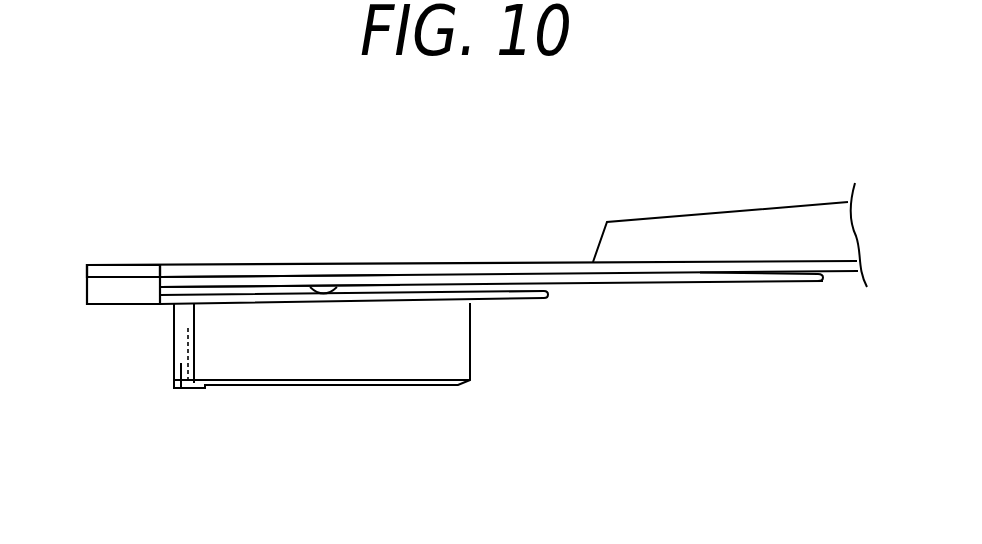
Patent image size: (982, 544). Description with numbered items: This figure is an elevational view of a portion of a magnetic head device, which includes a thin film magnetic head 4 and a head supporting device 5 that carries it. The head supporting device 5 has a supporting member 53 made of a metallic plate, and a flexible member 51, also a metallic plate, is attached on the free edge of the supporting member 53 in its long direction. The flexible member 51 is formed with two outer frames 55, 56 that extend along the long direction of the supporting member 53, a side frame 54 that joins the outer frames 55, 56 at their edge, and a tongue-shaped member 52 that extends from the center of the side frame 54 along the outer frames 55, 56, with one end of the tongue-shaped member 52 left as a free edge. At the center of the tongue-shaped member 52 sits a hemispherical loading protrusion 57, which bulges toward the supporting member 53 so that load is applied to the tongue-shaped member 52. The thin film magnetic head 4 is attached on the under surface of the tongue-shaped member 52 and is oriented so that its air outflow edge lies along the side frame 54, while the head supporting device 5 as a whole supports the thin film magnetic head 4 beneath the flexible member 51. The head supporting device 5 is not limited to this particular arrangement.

The thin film magnetic head 4 is at (315, 395).
The head supporting device 5 is at (528, 261).
The flexible member 51 is at (132, 315).
The tongue-shaped member 52 is at (493, 298).
The supporting member 53 is at (413, 271).
The side frame 54 is at (124, 288).
The outer frame 55 is at (215, 276).
The outer frame 56 is at (215, 276).
The hemispherical loading protrusion 57 is at (322, 287).